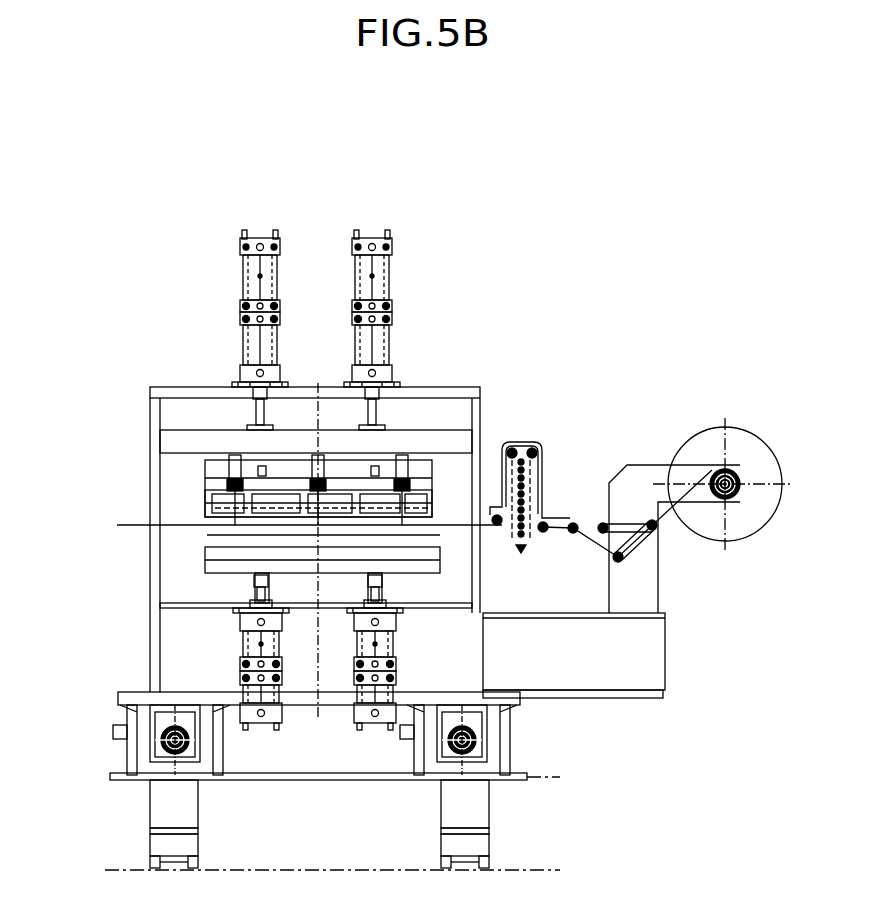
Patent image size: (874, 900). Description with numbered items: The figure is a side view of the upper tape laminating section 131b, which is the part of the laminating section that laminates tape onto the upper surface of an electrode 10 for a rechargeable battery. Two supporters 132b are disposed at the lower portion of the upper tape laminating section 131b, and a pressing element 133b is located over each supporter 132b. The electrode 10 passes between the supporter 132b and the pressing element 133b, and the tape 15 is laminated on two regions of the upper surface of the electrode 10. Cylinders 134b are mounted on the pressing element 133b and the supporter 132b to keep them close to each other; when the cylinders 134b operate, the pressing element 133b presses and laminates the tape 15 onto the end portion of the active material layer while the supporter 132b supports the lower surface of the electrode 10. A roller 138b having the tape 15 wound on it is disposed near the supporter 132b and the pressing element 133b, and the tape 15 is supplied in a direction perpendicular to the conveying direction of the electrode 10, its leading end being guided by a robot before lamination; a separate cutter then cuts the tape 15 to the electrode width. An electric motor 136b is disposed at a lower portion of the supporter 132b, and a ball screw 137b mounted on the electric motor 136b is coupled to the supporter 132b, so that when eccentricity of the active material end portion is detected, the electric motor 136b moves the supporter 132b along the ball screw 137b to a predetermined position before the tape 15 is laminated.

The upper tape laminating section 131b is at (587, 255).
The cylinders 134b is at (240, 362).
The pressing element 133b is at (432, 495).
The electrode 10 is at (207, 534).
The supporter 132b is at (207, 557).
The tape 15 is at (595, 537).
The roller 138b is at (730, 470).
The electric motor 136b is at (512, 723).
The ball screw 137b is at (510, 748).